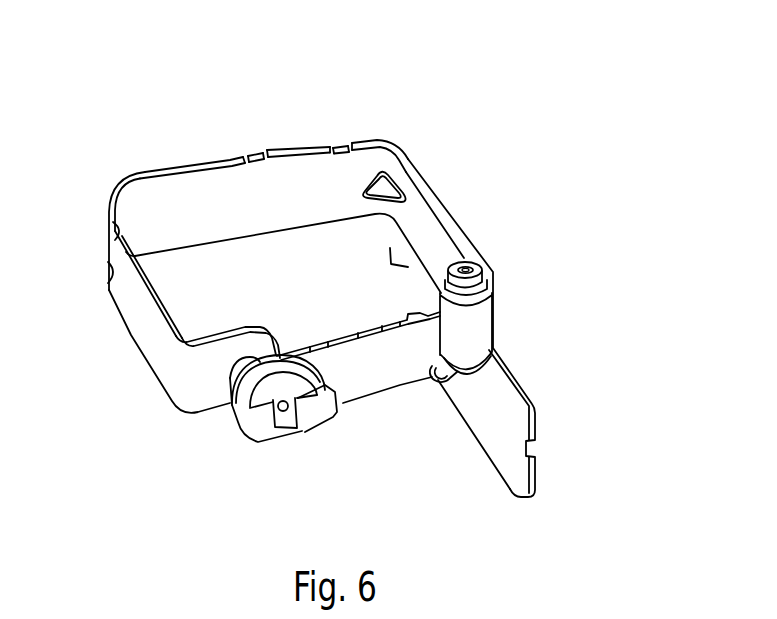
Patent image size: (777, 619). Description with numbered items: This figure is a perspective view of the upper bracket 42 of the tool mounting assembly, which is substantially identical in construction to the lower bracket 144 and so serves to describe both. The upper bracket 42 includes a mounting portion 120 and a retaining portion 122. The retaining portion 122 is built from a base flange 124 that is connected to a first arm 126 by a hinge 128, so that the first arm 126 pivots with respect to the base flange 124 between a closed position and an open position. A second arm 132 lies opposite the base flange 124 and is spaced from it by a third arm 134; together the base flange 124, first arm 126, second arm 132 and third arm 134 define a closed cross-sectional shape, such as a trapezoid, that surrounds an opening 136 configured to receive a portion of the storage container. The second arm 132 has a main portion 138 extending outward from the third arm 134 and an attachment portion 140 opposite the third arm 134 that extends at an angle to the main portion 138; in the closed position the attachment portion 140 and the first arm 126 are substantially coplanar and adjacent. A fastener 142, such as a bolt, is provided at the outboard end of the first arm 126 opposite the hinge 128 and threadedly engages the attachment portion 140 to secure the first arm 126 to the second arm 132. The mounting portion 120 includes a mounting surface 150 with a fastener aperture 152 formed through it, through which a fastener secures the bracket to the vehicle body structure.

The upper bracket 42 is at (187, 93).
The mounting portion 120 is at (550, 418).
The retaining portion 122 is at (427, 167).
The base flange 124 is at (443, 203).
The first arm 126 is at (347, 333).
The hinge 128 is at (483, 273).
The second arm 132 is at (143, 268).
The third arm 134 is at (290, 153).
The opening 136 is at (191, 191).
The main portion 138 is at (120, 338).
The attachment portion 140 is at (223, 330).
The fastener 142 is at (327, 433).
The lower bracket 144 is at (227, 397).
The mounting surface 150 is at (500, 463).
The fastener aperture 152 is at (434, 382).